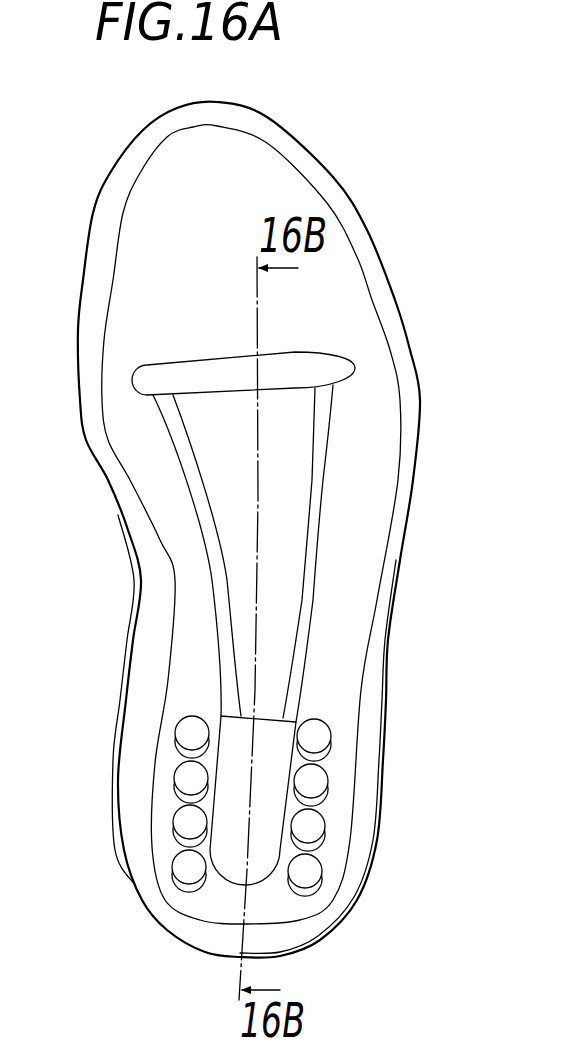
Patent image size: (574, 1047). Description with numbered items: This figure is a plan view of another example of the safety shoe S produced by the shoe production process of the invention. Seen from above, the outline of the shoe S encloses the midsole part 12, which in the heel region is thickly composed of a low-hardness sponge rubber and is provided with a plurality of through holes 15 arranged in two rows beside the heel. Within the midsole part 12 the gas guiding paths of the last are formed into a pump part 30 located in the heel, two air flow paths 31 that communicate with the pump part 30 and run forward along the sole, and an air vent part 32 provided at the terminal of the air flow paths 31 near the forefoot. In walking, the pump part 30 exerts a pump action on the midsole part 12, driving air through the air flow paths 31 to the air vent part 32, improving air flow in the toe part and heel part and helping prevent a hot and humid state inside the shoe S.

The safety shoe S is at (405, 315).
The midsole part 12 is at (378, 494).
The air vent part 32 is at (150, 363).
The air flow paths 31 is at (218, 583).
The pump part 30 is at (272, 765).
The through holes 15 is at (182, 734).